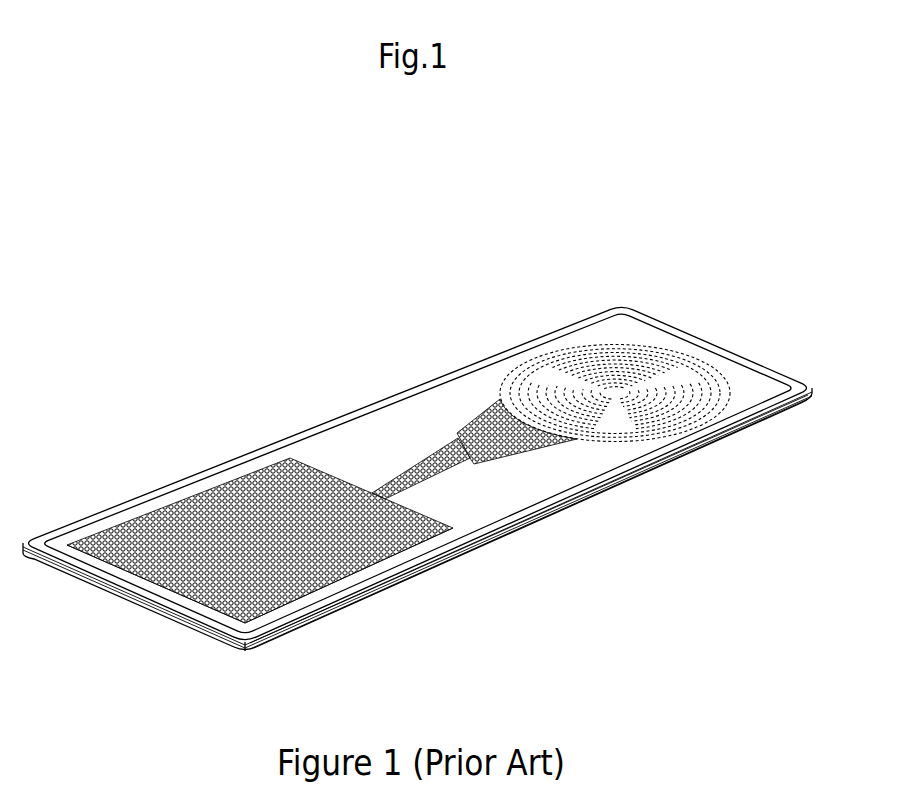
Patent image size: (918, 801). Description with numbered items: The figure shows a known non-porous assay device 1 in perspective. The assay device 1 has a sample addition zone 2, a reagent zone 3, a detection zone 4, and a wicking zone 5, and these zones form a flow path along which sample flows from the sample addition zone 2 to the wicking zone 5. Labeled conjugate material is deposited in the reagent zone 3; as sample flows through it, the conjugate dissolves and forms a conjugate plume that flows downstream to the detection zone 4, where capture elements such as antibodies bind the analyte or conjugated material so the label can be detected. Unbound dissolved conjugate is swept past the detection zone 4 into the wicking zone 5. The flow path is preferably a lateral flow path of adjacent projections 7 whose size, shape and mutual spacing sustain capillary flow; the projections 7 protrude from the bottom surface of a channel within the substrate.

The assay device 1 is at (306, 380).
The sample addition zone 2 is at (598, 365).
The reagent zone 3 is at (498, 404).
The detection zone 4 is at (418, 460).
The wicking zone 5 is at (185, 500).
The projections 7 is at (362, 550).